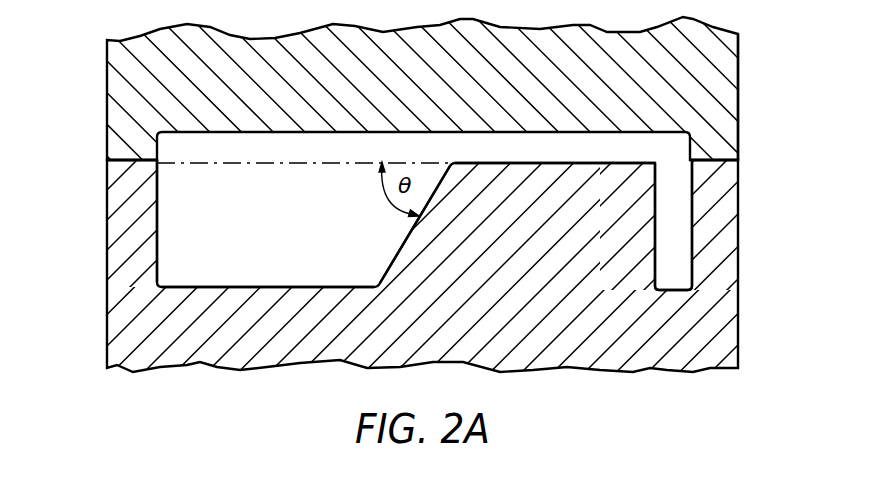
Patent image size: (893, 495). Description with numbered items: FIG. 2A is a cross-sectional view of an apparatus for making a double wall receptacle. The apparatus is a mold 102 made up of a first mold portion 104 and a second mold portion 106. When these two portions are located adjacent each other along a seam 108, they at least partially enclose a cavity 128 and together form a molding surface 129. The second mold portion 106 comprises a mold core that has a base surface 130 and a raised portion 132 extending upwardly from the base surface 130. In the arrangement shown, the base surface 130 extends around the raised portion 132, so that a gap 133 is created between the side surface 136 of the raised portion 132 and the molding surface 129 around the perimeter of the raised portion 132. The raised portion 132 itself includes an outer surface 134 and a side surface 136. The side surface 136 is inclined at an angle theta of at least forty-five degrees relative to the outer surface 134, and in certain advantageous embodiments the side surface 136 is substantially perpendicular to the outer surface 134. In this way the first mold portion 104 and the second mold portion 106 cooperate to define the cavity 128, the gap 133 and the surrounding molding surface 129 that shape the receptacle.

The mold 102 is at (739, 160).
The first mold portion 104 is at (107, 105).
The second mold portion 106 is at (107, 264).
The seam 108 is at (107, 160).
The cavity 128 is at (442, 158).
The molding surface 129 is at (157, 212).
The base surface 130 is at (248, 287).
The raised portion 132 is at (665, 184).
The gap 133 is at (320, 207).
The outer surface 134 is at (568, 162).
The side surface 136 is at (390, 261).